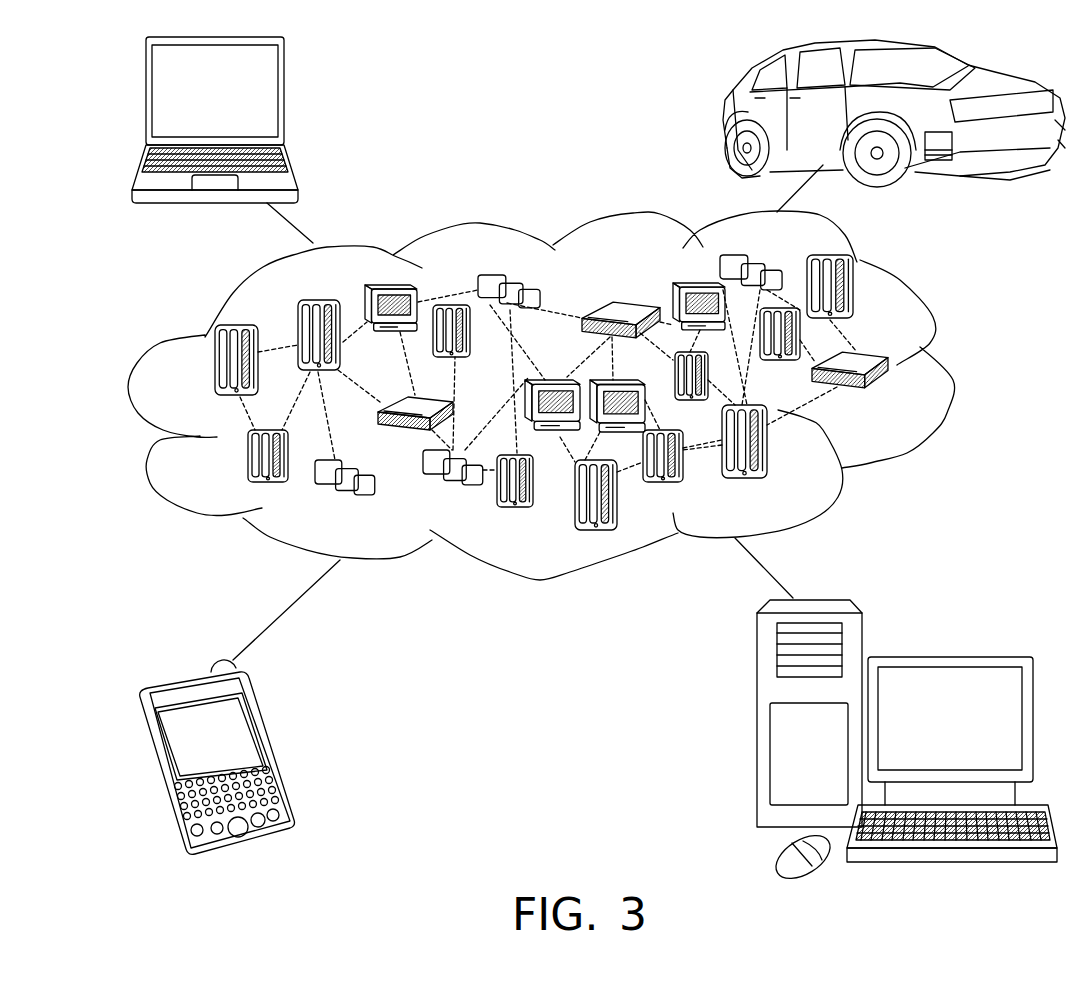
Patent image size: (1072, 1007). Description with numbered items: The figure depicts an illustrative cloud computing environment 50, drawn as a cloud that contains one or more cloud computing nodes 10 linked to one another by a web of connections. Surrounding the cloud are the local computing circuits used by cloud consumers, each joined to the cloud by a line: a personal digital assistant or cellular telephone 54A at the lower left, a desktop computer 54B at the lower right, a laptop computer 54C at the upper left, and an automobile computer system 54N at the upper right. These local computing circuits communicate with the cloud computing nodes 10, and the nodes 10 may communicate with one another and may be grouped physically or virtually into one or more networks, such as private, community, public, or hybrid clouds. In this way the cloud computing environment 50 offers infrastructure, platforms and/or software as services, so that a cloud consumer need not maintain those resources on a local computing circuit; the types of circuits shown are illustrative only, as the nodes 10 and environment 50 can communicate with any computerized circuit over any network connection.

The cloud computing environment 50 is at (952, 372).
The cloud computing nodes 10 is at (886, 399).
The personal digital assistant (PDA) or cellular telephone 54A is at (277, 752).
The desktop computer 54B is at (947, 650).
The laptop computer 54C is at (286, 100).
The automobile computer system 54N is at (723, 115).